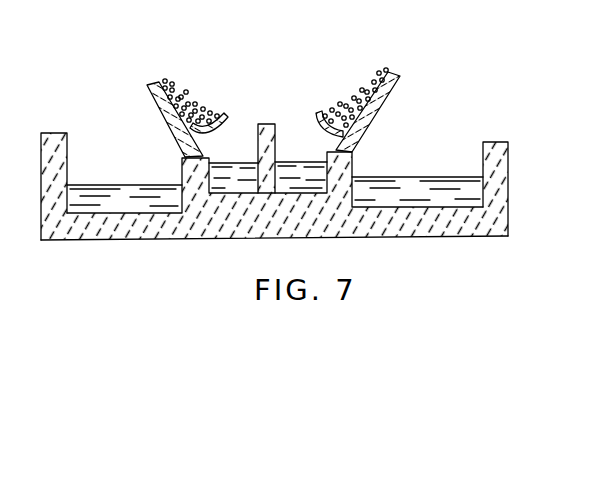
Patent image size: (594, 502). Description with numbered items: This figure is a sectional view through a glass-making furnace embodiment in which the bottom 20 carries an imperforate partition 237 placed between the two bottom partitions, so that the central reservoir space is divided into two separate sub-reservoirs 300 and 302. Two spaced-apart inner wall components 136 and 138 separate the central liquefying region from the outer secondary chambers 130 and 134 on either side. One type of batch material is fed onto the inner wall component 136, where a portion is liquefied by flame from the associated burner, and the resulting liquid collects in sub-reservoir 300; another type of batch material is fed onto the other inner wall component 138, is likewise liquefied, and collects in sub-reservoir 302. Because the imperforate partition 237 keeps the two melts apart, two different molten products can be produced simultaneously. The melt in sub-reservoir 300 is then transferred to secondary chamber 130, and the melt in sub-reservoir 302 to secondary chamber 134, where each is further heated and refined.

The bottom 20 is at (218, 238).
The secondary chamber 130 is at (113, 172).
The secondary chamber 134 is at (457, 160).
The inner wall component 136 is at (150, 92).
The inner wall component 138 is at (400, 77).
The imperforate partition 237 is at (272, 122).
The sub-reservoir 300 is at (236, 170).
The sub-reservoir 302 is at (292, 170).